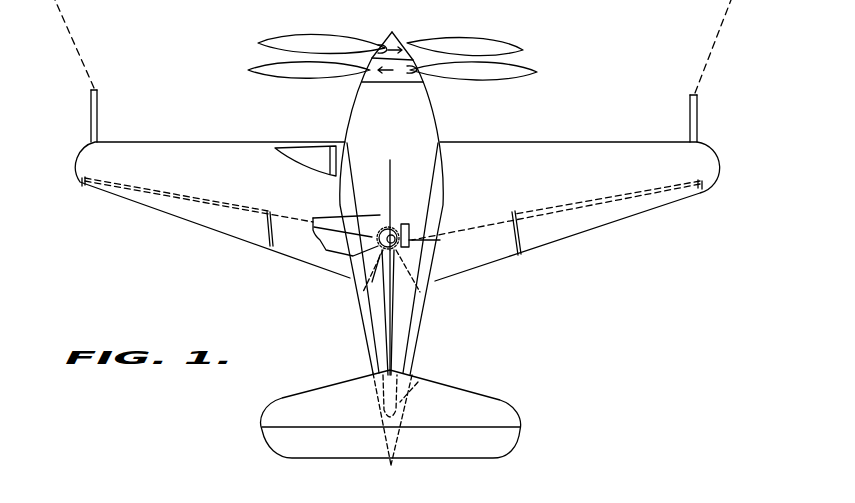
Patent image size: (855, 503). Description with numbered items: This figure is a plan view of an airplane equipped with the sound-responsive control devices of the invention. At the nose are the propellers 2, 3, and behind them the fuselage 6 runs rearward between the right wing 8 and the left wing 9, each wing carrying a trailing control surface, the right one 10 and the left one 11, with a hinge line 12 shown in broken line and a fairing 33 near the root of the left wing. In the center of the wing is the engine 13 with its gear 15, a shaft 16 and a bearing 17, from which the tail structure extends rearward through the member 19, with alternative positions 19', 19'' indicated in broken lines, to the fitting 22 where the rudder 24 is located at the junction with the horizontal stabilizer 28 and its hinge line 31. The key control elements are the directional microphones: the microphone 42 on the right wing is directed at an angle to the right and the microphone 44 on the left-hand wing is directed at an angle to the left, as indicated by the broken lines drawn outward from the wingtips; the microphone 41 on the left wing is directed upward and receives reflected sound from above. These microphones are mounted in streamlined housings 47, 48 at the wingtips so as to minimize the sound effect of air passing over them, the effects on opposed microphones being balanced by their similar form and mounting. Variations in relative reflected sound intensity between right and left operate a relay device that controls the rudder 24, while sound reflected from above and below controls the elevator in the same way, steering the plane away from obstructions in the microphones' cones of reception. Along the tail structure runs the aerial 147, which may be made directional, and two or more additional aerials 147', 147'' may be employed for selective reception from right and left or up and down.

The front propeller 2 is at (475, 42).
The rear propeller 3 is at (500, 78).
The fuselage 6 is at (435, 127).
The right wing 8 is at (585, 174).
The left wing 9 is at (225, 177).
The right aileron 10 is at (585, 227).
The left aileron 11 is at (185, 217).
The aileron hinge line 12 is at (480, 218).
The engine 13 is at (340, 227).
The gear 15 is at (380, 232).
The drive shaft 16 is at (389, 220).
The bearing 17 is at (409, 243).
The tail boom member 19 is at (420, 312).
The tail boom member alternative position 19' is at (346, 281).
The tail boom member alternative position 19'' is at (437, 272).
The tail fitting 22 is at (423, 378).
The rudder 24 is at (392, 467).
The horizontal stabilizer 28 is at (483, 400).
The elevator hinge line 31 is at (507, 442).
The wing fairing 33 is at (320, 153).
The microphone 41 is at (96, 90).
The microphone 42 is at (697, 95).
The microphone 44 is at (92, 90).
The streamlined housing 47 is at (98, 110).
The streamlined housing 48 is at (698, 115).
The aerial 147 is at (432, 312).
The aerial 147' is at (354, 258).
The aerial 147'' is at (463, 258).